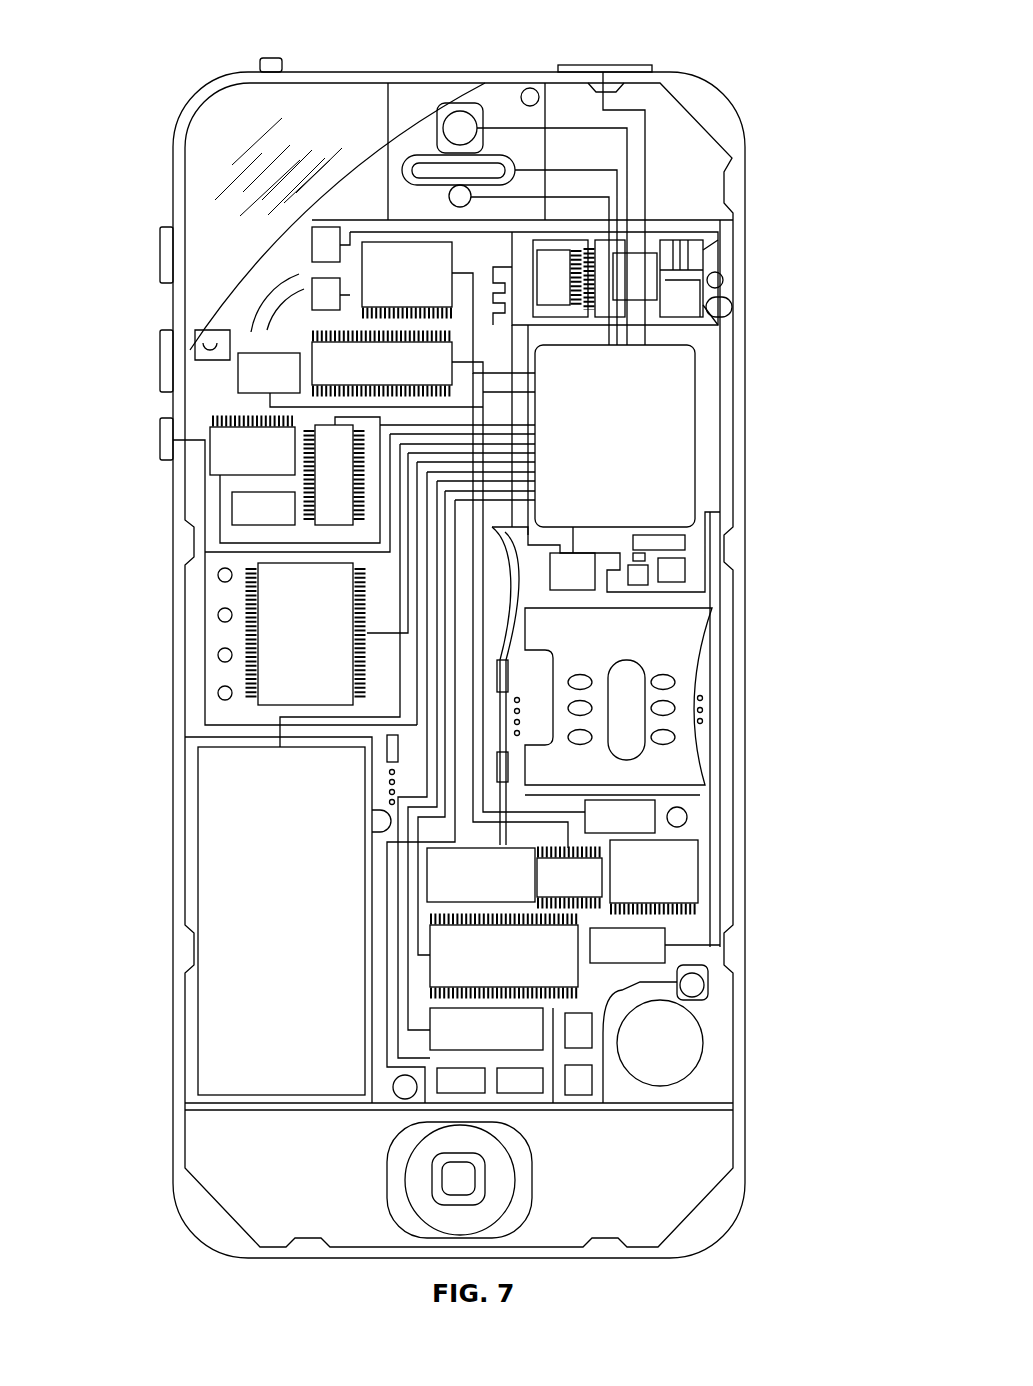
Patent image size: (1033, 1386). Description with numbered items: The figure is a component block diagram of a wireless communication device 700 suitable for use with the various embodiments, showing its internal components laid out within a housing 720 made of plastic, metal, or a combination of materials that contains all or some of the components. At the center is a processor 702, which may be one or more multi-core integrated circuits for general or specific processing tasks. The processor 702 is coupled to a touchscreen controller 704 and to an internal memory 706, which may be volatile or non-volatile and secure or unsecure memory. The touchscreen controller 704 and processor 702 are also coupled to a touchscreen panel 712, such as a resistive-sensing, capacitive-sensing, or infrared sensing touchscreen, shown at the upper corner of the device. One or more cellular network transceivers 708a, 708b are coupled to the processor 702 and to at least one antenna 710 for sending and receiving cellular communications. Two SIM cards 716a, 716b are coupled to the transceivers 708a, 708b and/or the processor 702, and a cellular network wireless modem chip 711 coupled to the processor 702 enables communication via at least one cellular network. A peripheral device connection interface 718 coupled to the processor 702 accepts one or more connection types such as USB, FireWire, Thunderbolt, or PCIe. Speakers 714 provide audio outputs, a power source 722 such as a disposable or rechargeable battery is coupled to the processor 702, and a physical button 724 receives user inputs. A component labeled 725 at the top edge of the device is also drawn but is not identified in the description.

The wireless communication device 700 is at (120, 70).
The processor 702 is at (462, 661).
The touchscreen controller 704 is at (448, 307).
The internal memory 706 is at (289, 634).
The cellular network transceiver 708a is at (638, 253).
The cellular network transceiver 708b is at (377, 480).
The antenna 710 is at (683, 305).
The cellular network wireless modem chip 711 is at (504, 956).
The touchscreen panel 712 is at (215, 172).
The speakers 714 is at (408, 157).
The SIM card 716a is at (612, 814).
The SIM card 716b is at (627, 945).
The peripheral device connection interface 718 is at (486, 1029).
The housing 720 is at (747, 1130).
The power source 722 is at (278, 920).
The physical button 724 is at (465, 1188).
The top connector 725 is at (603, 65).